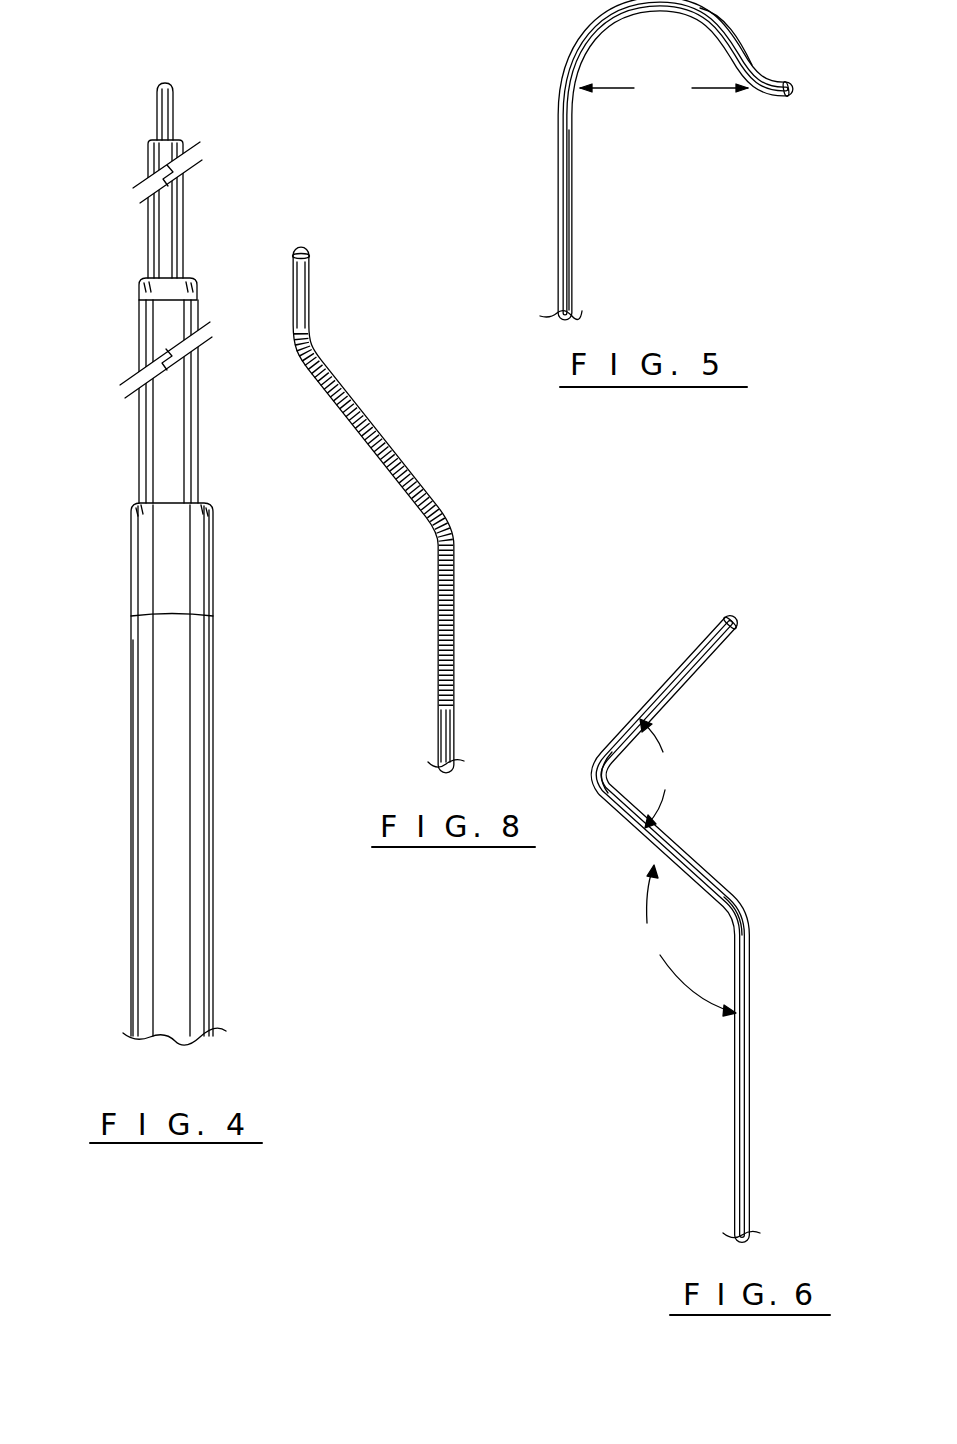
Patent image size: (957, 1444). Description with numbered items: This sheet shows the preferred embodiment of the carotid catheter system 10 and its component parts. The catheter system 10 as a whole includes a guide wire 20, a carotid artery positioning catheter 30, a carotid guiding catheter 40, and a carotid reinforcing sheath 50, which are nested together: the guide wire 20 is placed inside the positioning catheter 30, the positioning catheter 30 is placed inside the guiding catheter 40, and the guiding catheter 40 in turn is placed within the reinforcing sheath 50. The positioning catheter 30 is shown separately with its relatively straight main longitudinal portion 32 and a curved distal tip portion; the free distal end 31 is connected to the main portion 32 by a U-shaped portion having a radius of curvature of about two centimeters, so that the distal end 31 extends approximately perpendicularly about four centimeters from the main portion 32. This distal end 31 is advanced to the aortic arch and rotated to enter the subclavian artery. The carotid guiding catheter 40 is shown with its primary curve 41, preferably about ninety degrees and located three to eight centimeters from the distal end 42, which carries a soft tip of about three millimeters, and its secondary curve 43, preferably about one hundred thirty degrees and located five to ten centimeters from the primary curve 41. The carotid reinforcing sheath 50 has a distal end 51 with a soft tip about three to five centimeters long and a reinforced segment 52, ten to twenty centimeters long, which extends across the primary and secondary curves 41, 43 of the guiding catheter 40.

In FIG. 4, the catheter system 10 is at (80, 512).
In FIG. 4, the guide wire 20 is at (156, 90).
In FIG. 4, the carotid artery positioning catheter 30 is at (147, 230).
In FIG. 5, the carotid artery positioning catheter 30 is at (658, 162).
In FIG. 4, the distal end of the positioning catheter 31 is at (150, 148).
In FIG. 5, the distal end of the positioning catheter 31 is at (760, 68).
In FIG. 5, the main portion of the positioning catheter 32 is at (571, 238).
In FIG. 4, the carotid guiding catheter 40 is at (138, 445).
In FIG. 6, the carotid guiding catheter 40 is at (678, 897).
In FIG. 6, the primary curve of carotid guiding catheter 41 is at (590, 776).
In FIG. 4, the distal end of carotid guiding catheter 42 is at (133, 287).
In FIG. 6, the distal end of carotid guiding catheter 42 is at (735, 622).
In FIG. 6, the secondary curve of carotid guiding catheter 43 is at (745, 916).
In FIG. 4, the carotid reinforcing sheath 50 is at (141, 774).
In FIG. 8, the carotid reinforcing sheath 50 is at (379, 487).
In FIG. 4, the distal end of carotid reinforcing sheath 51 is at (130, 562).
In FIG. 8, the distal end of carotid reinforcing sheath 51 is at (303, 253).
In FIG. 4, the reinforced segment of carotid reinforcing sheath 52 is at (135, 792).
In FIG. 8, the reinforced segment of carotid reinforcing sheath 52 is at (395, 438).